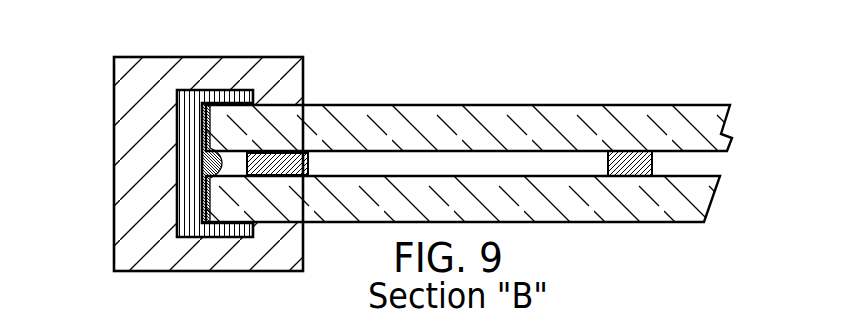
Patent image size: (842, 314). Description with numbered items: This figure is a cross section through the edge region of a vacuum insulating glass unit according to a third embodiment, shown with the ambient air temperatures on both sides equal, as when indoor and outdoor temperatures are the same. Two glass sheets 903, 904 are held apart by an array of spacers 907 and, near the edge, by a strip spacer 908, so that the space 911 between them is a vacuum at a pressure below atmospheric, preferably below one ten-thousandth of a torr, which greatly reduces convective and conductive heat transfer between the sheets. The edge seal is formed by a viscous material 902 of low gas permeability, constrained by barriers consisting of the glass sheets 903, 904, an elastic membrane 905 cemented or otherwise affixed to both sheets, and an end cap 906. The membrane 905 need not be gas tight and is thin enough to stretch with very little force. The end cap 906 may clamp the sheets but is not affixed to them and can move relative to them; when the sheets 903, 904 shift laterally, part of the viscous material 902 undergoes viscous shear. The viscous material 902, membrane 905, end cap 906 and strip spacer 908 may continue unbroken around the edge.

The viscous material 902 is at (197, 90).
The glass sheet 903 is at (520, 222).
The glass sheet 904 is at (500, 105).
The elastic membrane 905 is at (202, 181).
The end cap 906 is at (231, 57).
The spacers 907 is at (631, 151).
The strip spacer 908 is at (308, 163).
The space 911 is at (545, 165).